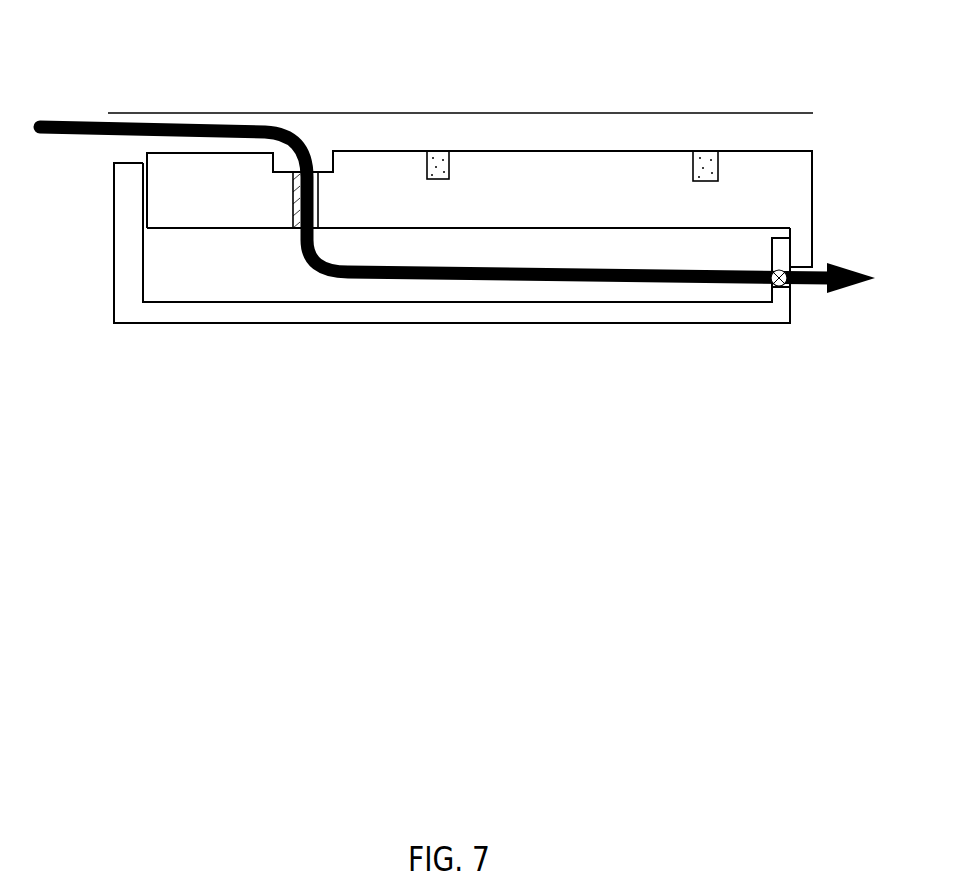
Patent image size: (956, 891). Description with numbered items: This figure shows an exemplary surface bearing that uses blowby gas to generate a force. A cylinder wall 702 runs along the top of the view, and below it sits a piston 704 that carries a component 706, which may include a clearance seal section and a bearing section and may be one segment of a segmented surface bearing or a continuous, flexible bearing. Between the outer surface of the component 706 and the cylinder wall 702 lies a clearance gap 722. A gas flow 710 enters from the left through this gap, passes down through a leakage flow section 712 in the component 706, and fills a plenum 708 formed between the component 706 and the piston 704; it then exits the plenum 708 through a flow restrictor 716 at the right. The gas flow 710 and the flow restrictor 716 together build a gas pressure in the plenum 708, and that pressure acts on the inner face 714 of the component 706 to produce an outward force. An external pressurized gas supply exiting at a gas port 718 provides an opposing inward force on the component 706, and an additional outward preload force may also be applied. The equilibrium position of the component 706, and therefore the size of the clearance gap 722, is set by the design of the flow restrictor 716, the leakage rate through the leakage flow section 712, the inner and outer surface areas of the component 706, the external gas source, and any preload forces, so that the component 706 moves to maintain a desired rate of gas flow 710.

The cylinder wall 702 is at (122, 112).
The piston 704 is at (114, 218).
The component 706 is at (574, 134).
The plenum 708 is at (199, 283).
The gas flow 710 is at (44, 122).
The leakage flow section 712 is at (310, 168).
The inner face 714 is at (550, 229).
The flow restrictor 716 is at (792, 288).
The gas port 718 is at (440, 150).
The clearance gap 722 is at (775, 133).